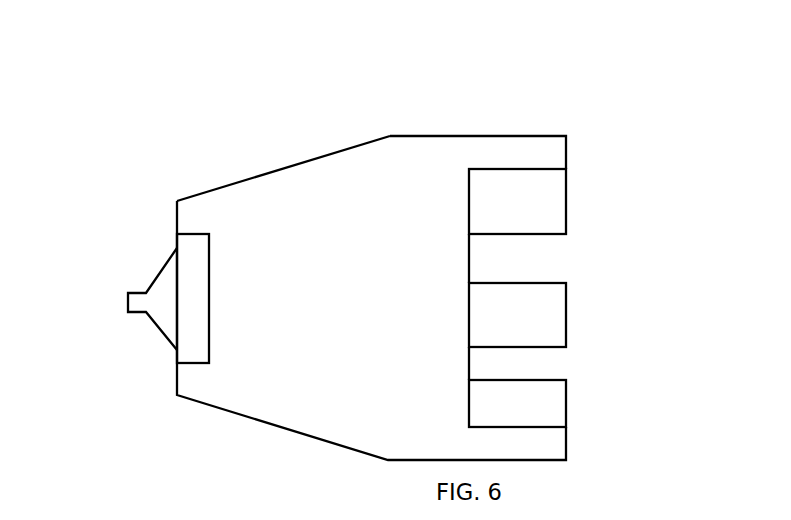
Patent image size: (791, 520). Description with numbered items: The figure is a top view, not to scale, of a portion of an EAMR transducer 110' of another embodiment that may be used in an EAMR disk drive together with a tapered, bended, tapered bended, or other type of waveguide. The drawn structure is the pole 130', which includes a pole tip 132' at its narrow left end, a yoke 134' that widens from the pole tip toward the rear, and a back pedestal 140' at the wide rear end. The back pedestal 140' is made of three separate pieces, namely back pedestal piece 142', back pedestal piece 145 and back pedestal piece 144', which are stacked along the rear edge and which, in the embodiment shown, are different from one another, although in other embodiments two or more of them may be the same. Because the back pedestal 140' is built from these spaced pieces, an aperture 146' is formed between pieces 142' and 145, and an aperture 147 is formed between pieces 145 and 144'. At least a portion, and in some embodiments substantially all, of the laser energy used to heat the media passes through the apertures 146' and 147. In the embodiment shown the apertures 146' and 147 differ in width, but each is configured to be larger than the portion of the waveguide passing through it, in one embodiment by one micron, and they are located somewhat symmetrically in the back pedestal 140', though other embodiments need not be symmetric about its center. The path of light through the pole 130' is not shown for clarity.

The EAMR transducer 110' is at (363, 242).
The pole 130' is at (371, 251).
The yoke 134' is at (283, 145).
The pole tip 132' is at (134, 298).
The back pedestal 140' is at (568, 257).
The back pedestal piece 142' is at (553, 178).
The aperture 146' is at (561, 236).
The back pedestal piece 145 is at (566, 307).
The aperture 147 is at (567, 363).
The back pedestal piece 144' is at (553, 410).